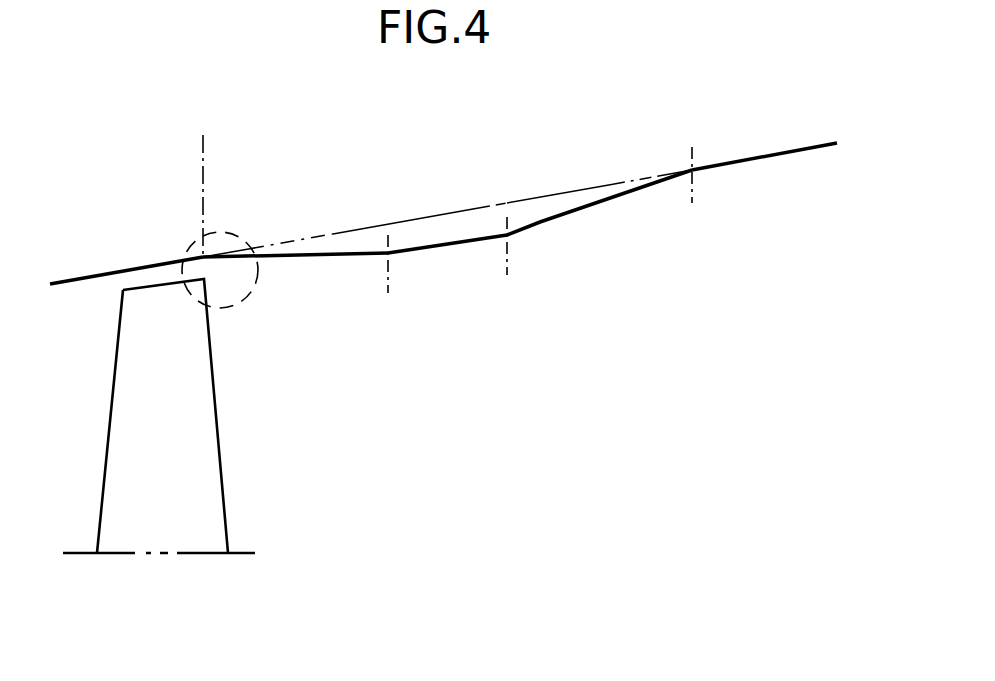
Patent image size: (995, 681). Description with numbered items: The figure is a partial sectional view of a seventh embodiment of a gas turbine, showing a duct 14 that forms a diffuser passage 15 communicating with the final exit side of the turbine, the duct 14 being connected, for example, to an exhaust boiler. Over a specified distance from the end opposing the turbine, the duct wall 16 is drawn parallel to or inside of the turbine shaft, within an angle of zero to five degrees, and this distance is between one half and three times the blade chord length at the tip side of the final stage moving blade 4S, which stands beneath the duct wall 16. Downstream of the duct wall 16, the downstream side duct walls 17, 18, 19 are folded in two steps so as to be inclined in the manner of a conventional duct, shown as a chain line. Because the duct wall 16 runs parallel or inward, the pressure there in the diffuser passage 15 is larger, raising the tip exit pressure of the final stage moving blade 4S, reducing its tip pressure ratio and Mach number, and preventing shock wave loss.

The duct 14 is at (542, 222).
The diffuser passage 15 is at (491, 432).
The duct wall 16 is at (342, 254).
The downstream side duct wall 17 is at (445, 254).
The downstream side duct wall 18 is at (575, 210).
The downstream side duct wall 19 is at (737, 163).
The final stage moving blade 4S is at (127, 418).